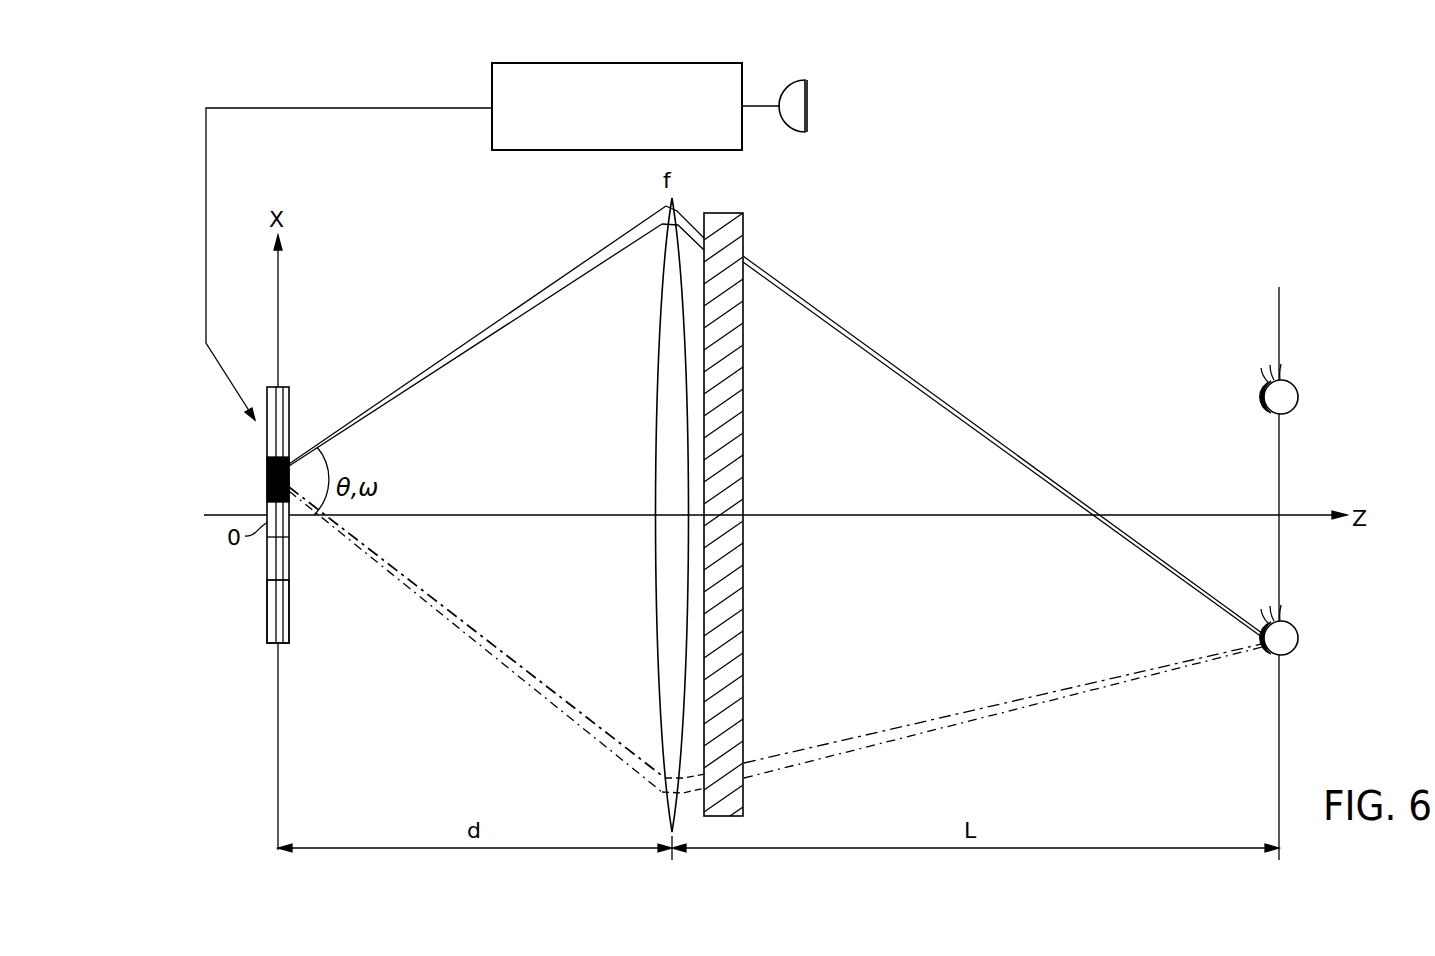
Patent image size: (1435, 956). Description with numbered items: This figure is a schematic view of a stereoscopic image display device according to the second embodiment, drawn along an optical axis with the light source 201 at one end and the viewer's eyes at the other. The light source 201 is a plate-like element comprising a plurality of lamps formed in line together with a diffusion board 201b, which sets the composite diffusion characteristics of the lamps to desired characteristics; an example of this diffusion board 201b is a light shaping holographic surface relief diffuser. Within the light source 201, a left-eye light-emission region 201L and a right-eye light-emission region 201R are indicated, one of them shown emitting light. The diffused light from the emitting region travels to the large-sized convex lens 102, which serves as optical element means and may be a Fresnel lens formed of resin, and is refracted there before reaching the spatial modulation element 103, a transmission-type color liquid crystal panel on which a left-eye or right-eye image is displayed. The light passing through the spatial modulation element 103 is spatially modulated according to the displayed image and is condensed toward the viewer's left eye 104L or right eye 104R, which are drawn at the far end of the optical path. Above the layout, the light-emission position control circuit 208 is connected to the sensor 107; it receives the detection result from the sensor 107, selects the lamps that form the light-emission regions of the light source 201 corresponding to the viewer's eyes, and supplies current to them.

The light-emission position control circuit 208 is at (492, 134).
The sensor 107 is at (808, 93).
The convex lens 102 is at (667, 288).
The spatial modulation element 103 is at (743, 232).
The right eye 104R is at (1307, 378).
The left eye 104L is at (1306, 626).
The light source 201 is at (278, 644).
The left-eye light-emission region 201L is at (289, 458).
The right-eye light-emission region 201R is at (282, 559).
The diffusion board 201b is at (289, 611).